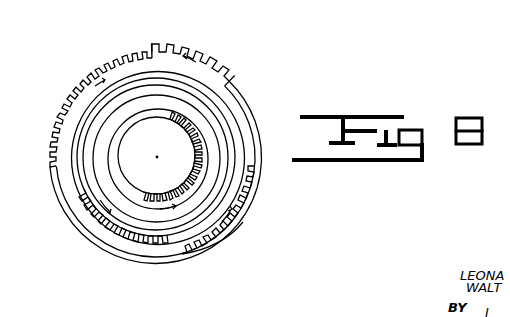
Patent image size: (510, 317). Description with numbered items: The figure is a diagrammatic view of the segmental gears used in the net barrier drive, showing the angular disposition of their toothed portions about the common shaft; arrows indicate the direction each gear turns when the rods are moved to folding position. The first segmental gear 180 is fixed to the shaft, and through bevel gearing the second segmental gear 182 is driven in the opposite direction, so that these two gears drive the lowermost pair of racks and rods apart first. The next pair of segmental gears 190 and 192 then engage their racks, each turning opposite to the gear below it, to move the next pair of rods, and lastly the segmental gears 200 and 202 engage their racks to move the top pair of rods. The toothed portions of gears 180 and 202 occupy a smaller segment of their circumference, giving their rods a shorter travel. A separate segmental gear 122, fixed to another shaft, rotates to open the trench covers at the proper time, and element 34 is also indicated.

The housing 34 is at (300, 6).
The segmental gear 122 is at (197, 172).
The first segmental gear 180 is at (228, 60).
The second segmental gear 182 is at (133, 52).
The segmental gear 190 is at (240, 228).
The segmental gear 192 is at (120, 245).
The segmental gear 200 is at (84, 181).
The segmental gear 202 is at (215, 250).